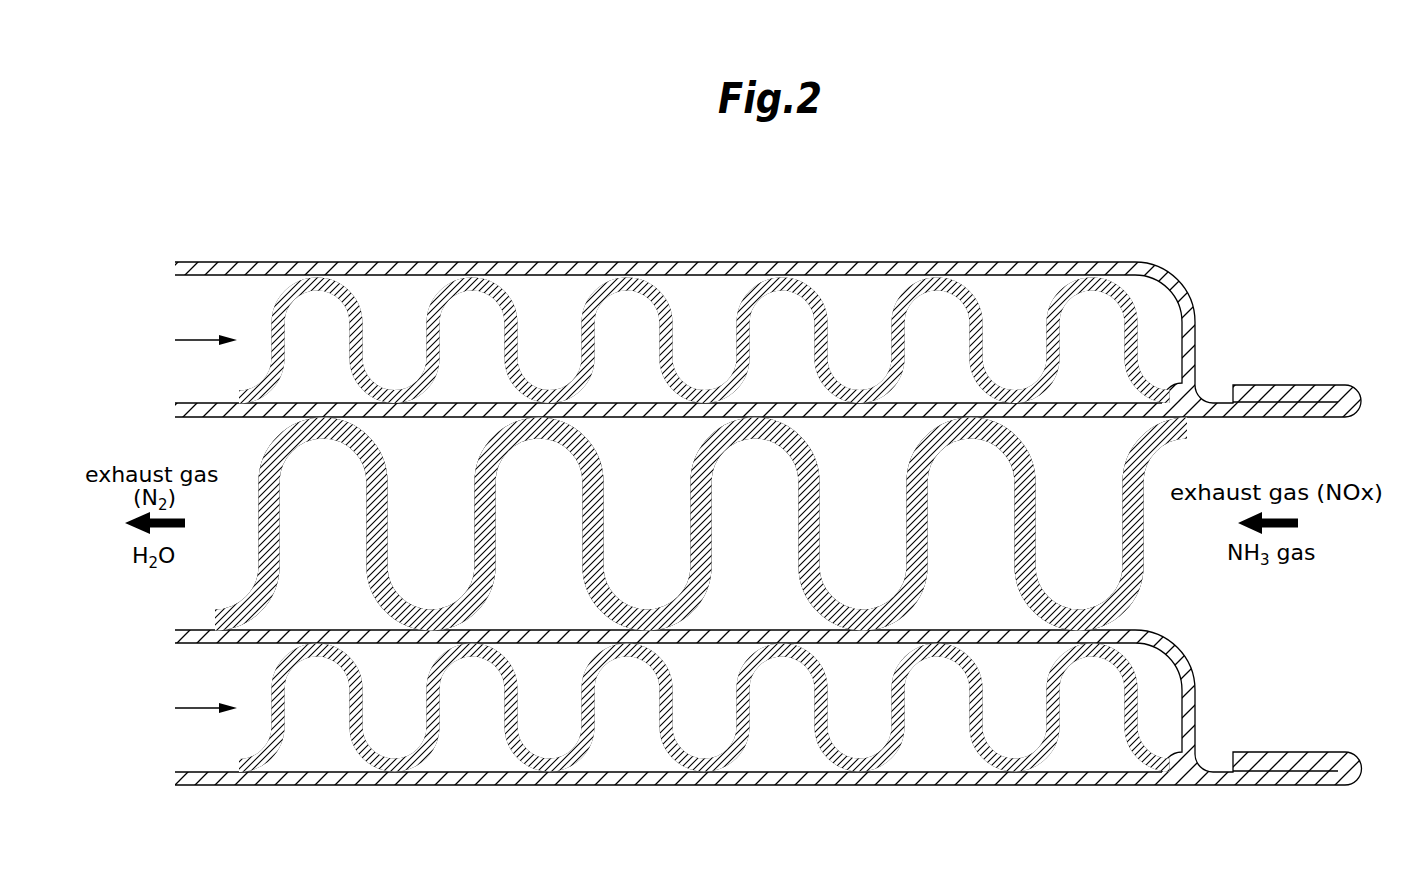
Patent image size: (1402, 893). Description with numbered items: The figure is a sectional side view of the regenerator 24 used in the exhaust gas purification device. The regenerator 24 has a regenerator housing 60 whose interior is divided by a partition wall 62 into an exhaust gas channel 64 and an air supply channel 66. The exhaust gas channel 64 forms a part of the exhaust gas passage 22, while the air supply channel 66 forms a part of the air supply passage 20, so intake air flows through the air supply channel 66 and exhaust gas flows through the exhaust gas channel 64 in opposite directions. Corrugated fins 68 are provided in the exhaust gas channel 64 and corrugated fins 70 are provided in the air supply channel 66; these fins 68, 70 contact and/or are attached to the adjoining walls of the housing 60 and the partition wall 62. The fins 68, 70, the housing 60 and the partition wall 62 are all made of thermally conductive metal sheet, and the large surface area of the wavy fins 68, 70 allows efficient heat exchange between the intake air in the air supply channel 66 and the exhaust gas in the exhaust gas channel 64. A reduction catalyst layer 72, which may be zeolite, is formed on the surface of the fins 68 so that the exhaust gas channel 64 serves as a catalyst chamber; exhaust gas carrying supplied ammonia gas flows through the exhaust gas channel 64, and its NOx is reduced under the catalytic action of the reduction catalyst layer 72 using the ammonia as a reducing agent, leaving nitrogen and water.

The air supply passage 20 is at (217, 385).
The exhaust gas passage 22 is at (1288, 615).
The regenerator 24 is at (981, 262).
The regenerator housing 60 is at (845, 263).
The partition wall 62 is at (847, 420).
The exhaust gas channel 64 is at (847, 590).
The air supply channel 66 is at (384, 297).
The corrugated fin 68 is at (1034, 518).
The corrugated fin 70 is at (898, 329).
The reduction catalyst layer 72 is at (930, 538).